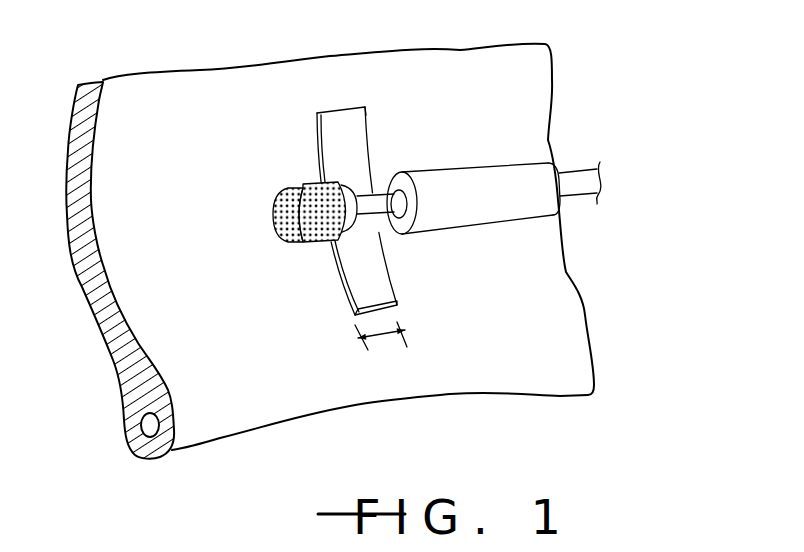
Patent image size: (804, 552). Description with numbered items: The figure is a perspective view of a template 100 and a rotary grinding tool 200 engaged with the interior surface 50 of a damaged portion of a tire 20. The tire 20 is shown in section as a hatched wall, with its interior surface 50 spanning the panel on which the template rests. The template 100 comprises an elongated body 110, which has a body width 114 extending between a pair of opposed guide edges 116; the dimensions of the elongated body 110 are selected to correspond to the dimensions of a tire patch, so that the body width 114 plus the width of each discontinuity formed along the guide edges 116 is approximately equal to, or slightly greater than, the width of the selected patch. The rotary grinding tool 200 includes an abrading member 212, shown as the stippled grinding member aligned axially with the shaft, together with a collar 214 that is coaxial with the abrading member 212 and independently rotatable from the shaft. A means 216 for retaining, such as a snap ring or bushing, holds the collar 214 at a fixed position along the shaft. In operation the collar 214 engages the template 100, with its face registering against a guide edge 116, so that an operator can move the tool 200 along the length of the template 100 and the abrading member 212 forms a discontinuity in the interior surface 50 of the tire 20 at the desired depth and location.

The tire 20 is at (124, 200).
The interior surface 50 is at (194, 228).
The template 100 is at (328, 202).
The elongated body 110 is at (327, 147).
The body width 114 is at (385, 334).
The guide edges 116 is at (316, 145).
The rotary grinding tool 200 is at (612, 178).
The abrading member 212 is at (299, 243).
The collar 214 is at (354, 221).
The means for retaining the collar 216 is at (373, 195).